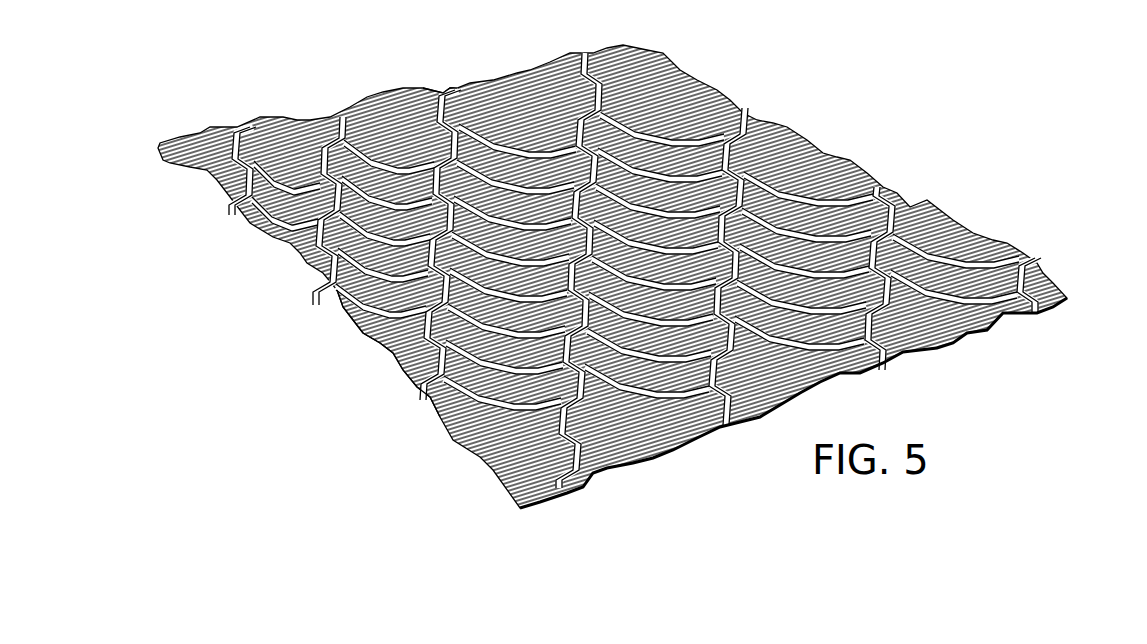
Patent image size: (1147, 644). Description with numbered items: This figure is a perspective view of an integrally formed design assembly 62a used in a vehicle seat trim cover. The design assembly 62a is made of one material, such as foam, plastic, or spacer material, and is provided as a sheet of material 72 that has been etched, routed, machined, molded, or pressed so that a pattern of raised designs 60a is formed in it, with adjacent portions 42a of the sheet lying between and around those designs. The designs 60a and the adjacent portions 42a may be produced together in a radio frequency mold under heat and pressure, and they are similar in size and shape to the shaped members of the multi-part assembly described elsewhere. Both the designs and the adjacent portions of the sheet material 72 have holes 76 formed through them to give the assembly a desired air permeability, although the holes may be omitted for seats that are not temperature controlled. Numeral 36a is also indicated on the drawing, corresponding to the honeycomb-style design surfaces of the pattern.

The sheet of material 72 is at (330, 338).
The holes 76 is at (451, 92).
The designs 60a is at (396, 357).
The adjacent portions 42a is at (523, 468).
The planar surface portion 36a is at (622, 445).
The design assembly 62a is at (1012, 331).